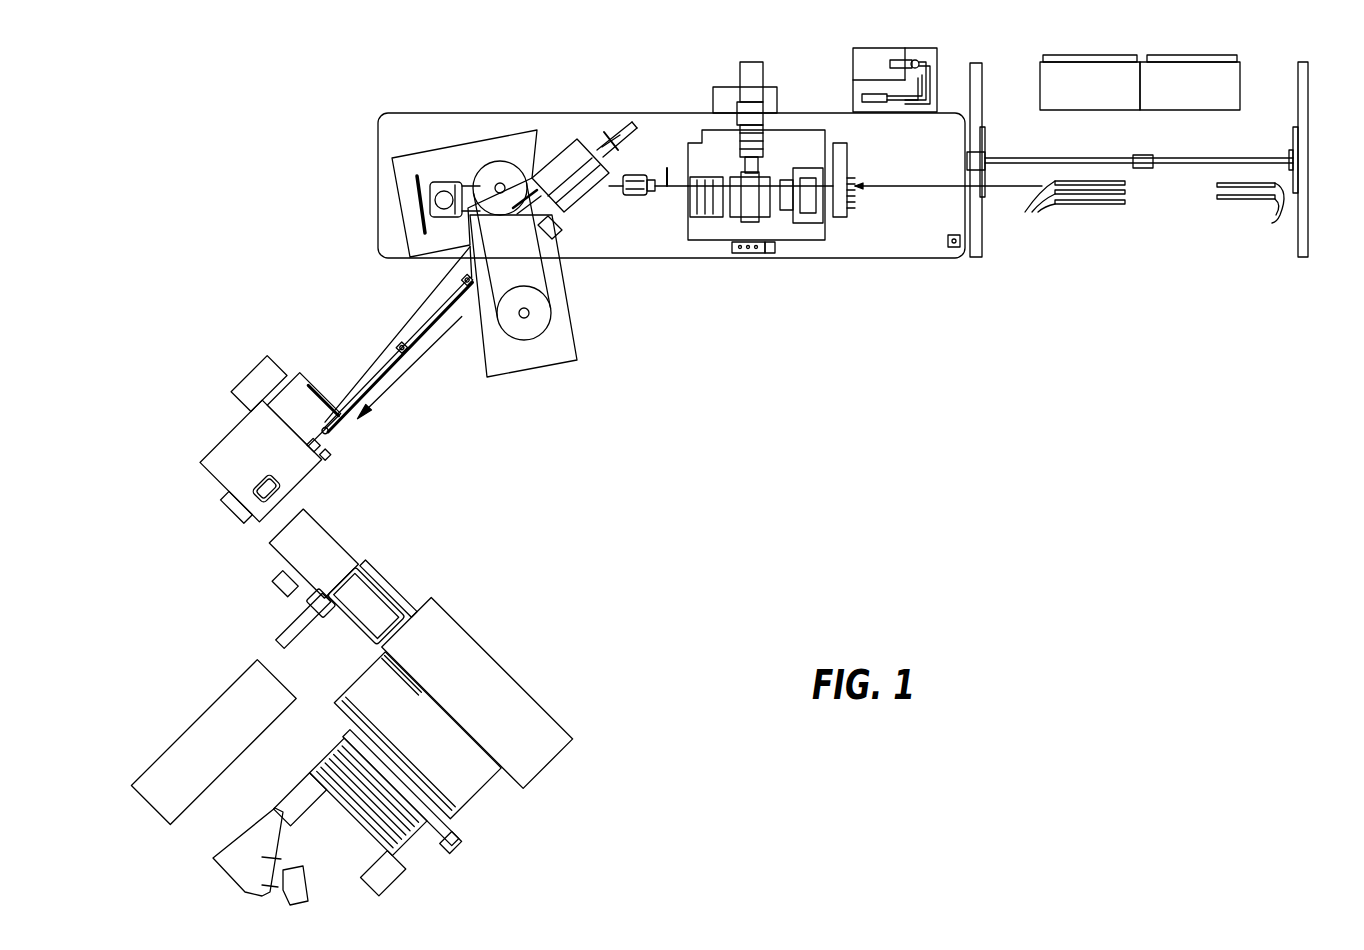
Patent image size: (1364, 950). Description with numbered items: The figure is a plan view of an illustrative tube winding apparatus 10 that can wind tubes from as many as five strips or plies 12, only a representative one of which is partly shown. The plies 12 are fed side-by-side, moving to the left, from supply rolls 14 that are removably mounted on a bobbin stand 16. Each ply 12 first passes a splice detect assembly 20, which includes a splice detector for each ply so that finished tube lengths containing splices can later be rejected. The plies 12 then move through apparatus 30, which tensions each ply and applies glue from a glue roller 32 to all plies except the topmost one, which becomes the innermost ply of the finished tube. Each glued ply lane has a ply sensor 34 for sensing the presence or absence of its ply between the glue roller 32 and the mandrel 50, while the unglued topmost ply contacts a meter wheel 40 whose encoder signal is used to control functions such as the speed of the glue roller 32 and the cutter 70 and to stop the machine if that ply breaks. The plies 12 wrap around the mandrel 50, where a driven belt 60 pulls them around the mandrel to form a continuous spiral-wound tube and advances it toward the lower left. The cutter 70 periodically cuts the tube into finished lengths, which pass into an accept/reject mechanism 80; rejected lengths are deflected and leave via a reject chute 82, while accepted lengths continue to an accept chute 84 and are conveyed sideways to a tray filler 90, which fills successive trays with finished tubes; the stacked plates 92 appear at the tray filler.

The tube winding apparatus 10 is at (332, 203).
The plies 12 is at (660, 161).
The supply rolls 14 is at (1061, 217).
The bobbin stand 16 is at (1308, 80).
The splice detect assembly 20 is at (840, 217).
The apparatus 30 is at (787, 253).
The glue roller 32 is at (733, 208).
The ply sensor 34 is at (738, 117).
The meter wheel 40 is at (683, 187).
The mandrel 50 is at (553, 220).
The belt 60 is at (561, 285).
The cutter 70 is at (327, 445).
The accept/reject mechanism 80 is at (238, 432).
The reject chute 82 is at (307, 497).
The accept chute 84 is at (270, 513).
The tray filler 90 is at (543, 723).
The plates 92 is at (393, 837).